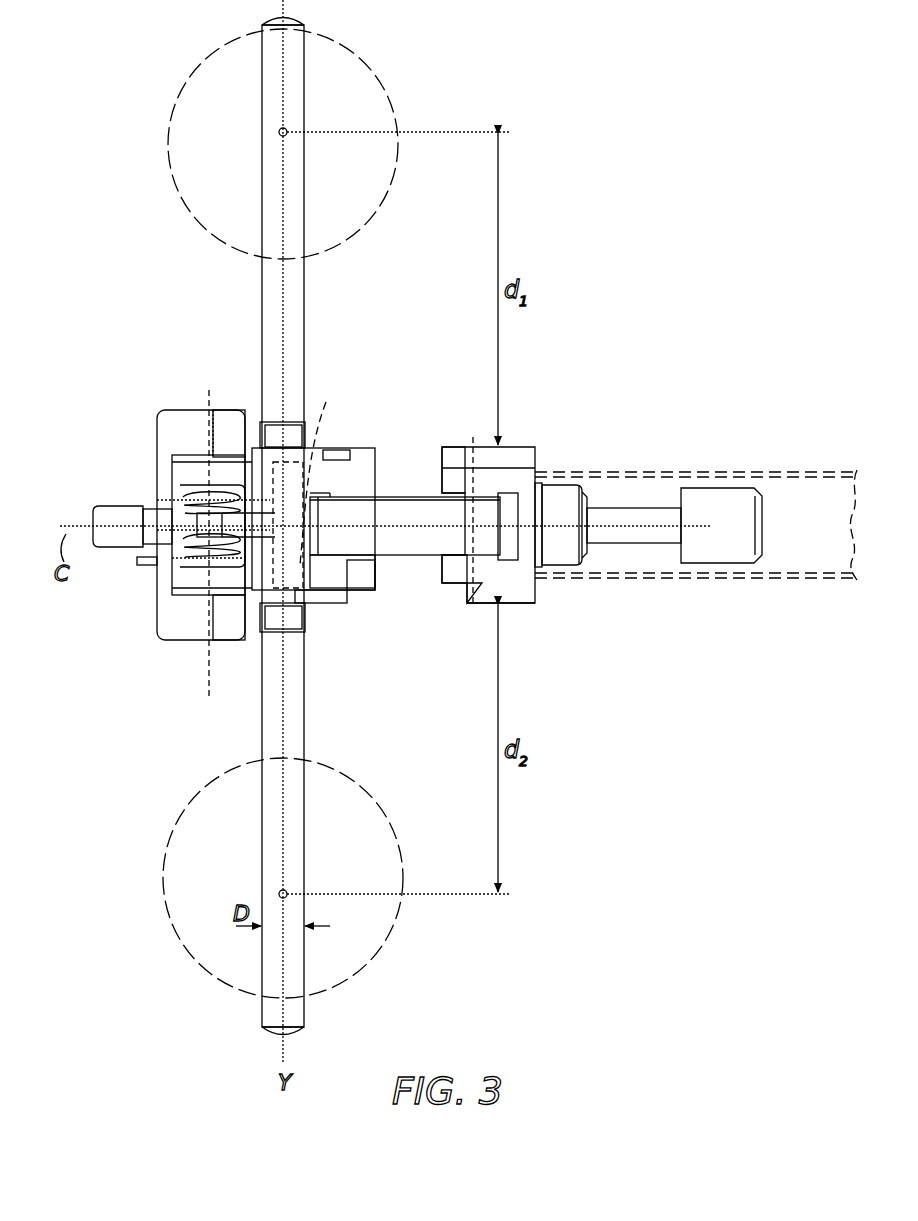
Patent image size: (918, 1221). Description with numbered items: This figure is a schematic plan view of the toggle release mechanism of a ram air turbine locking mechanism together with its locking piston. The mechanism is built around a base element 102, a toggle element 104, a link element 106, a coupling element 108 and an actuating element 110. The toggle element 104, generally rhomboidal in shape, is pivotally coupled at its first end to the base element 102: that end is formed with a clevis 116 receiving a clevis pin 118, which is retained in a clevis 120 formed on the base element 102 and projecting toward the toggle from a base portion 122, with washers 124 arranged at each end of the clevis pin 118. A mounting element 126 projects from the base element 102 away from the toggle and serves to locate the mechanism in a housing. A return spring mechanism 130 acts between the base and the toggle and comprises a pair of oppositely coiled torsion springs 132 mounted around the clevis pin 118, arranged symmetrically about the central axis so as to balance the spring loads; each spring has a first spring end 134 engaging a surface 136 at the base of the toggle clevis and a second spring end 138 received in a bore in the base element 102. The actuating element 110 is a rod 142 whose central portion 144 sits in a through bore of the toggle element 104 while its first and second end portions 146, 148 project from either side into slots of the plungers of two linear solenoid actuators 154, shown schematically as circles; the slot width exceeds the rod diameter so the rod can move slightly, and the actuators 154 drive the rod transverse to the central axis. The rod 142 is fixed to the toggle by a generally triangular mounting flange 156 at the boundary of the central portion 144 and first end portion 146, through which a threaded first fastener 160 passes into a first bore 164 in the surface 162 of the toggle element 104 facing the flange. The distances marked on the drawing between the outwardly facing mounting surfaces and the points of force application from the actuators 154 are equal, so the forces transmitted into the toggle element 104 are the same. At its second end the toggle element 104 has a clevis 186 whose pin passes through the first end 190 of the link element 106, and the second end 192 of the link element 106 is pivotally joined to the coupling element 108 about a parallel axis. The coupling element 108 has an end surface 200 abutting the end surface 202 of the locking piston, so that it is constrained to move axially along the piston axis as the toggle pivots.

The base element 102 is at (160, 418).
The toggle element 104 is at (368, 468).
The link element 106 is at (410, 505).
The coupling element 108 is at (523, 472).
The actuating element 110 is at (303, 297).
The clevis 116 is at (228, 485).
The clevis pin 118 is at (185, 535).
The clevis 120 is at (235, 457).
The base portion 122 is at (243, 600).
The washers 124 is at (197, 455).
The mounting element 126 is at (118, 547).
The return spring mechanism 130 is at (182, 500).
The torsion springs 132 is at (188, 490).
The first spring end 134 is at (272, 612).
The surface 136 is at (285, 460).
The second spring end 138 is at (175, 565).
The rod 142 is at (268, 1034).
The central portion 144 is at (308, 445).
The first end portion 146 is at (303, 820).
The second end portion 148 is at (303, 235).
The linear solenoid actuators 154 is at (372, 66).
The mounting flange 156 is at (335, 605).
The first fastener 160 is at (298, 615).
The surface 162 is at (370, 595).
The first bore 164 is at (330, 530).
The clevis 186 is at (362, 497).
The first end 190 is at (360, 535).
The second end 192 is at (475, 512).
The end surface 200 is at (535, 588).
The end surface 202 is at (545, 470).